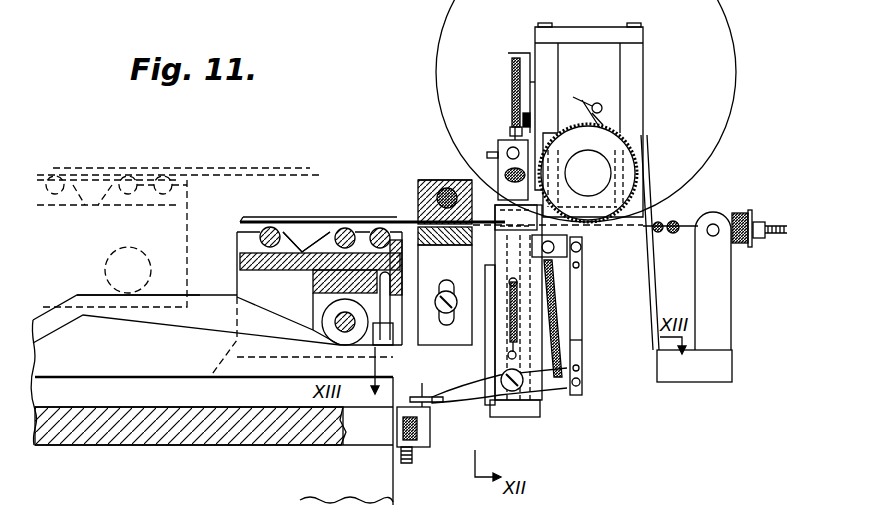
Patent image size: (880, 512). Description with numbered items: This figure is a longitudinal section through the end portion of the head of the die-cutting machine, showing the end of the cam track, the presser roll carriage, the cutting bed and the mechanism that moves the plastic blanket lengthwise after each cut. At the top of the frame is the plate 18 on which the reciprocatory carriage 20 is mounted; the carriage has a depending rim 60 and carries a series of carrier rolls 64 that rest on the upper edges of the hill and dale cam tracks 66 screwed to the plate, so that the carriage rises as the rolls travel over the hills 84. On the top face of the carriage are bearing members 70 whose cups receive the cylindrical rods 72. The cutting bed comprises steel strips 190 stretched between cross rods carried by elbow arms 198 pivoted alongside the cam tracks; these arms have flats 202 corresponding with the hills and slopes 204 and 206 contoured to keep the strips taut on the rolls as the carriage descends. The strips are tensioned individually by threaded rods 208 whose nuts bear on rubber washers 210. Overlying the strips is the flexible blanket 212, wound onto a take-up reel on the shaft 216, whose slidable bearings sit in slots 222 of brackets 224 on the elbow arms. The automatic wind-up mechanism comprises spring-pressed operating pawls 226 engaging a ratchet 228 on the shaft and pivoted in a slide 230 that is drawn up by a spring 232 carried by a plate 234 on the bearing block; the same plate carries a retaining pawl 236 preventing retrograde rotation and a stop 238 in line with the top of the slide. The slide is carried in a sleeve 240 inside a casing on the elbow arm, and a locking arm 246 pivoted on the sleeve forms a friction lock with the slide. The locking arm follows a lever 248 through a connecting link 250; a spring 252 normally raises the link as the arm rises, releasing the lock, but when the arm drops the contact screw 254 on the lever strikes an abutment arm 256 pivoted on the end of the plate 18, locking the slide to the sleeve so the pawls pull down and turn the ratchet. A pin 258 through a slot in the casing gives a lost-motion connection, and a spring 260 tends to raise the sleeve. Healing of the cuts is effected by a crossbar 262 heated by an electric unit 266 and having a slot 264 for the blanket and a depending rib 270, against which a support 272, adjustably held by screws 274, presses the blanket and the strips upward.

The plate 18 is at (152, 433).
The reciprocatory carriage 20 is at (319, 288).
The depending rim 60 is at (230, 322).
The carrier rolls 64 is at (130, 247).
The cam tracks 66 is at (97, 307).
The bearing members 70 is at (298, 233).
The cylindrical rods 72 is at (260, 238).
The hills 84 is at (197, 297).
The steel strips 190 is at (638, 238).
The elbow arms 198 is at (167, 380).
The flats 202 is at (132, 317).
The slope 204 is at (52, 330).
The slope 206 is at (287, 333).
The threaded rods 208 is at (768, 228).
The rubber washers 210 is at (740, 215).
The flexible blanket 212 is at (257, 220).
The take-up shaft 216 is at (593, 167).
The slots 222 is at (618, 60).
The brackets 224 is at (646, 242).
The operating pawls 226 is at (508, 150).
The ratchet 228 is at (640, 163).
The slide 230 is at (510, 195).
The spring 232 is at (513, 68).
The plate 234 is at (533, 84).
The retaining pawl 236 is at (598, 102).
The stop 238 is at (523, 122).
The sleeve 240 is at (537, 408).
The locking arm 246 is at (581, 275).
The lever 248 is at (462, 395).
The connecting link 250 is at (578, 353).
The spring 252 is at (553, 302).
The contact screw 254 is at (393, 410).
The abutment arm 256 is at (427, 445).
The pin 258 is at (515, 358).
The spring 260 is at (517, 232).
The crossbar 262 is at (440, 190).
The slot 264 is at (423, 213).
The electric unit 266 is at (443, 182).
The depending rib 270 is at (420, 190).
The support 272 is at (445, 295).
The screws 274 is at (387, 340).